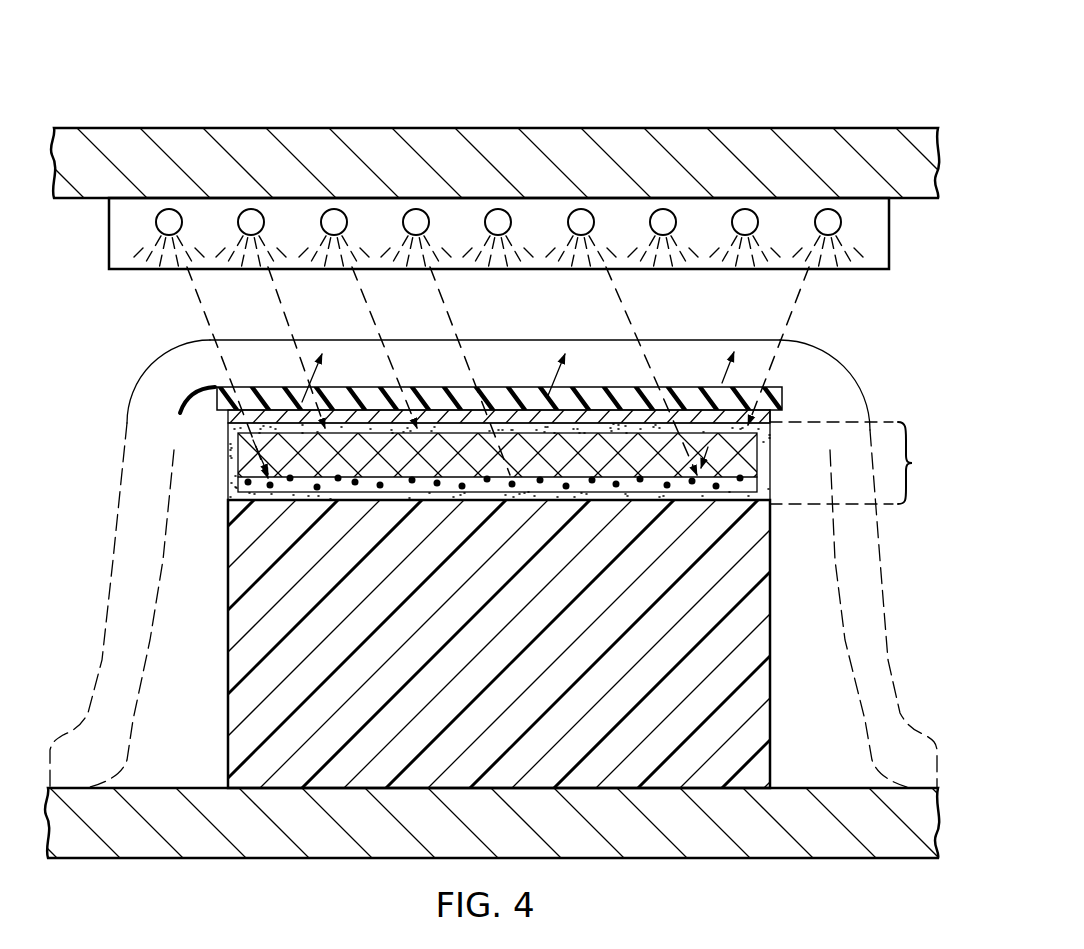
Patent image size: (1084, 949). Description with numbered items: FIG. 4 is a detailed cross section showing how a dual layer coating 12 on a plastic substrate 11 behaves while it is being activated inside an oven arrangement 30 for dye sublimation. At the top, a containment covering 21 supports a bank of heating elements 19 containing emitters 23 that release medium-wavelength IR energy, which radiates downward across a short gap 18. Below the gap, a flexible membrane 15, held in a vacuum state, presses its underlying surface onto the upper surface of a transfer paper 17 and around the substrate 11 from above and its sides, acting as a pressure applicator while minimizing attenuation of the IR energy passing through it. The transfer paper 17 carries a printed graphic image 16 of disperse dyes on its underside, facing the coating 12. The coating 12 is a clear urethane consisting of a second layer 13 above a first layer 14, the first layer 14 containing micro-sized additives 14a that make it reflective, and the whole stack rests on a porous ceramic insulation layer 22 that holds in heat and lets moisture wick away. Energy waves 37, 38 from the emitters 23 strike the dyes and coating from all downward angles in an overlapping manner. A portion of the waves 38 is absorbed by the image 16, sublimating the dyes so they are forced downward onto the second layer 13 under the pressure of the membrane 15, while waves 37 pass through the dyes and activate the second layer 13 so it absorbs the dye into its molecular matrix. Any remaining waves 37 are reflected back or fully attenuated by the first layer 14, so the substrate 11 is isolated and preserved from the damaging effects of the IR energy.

The oven arrangement 30 is at (218, 68).
The containment covering 21 is at (865, 138).
The bank of heating elements 19 is at (892, 232).
The emitters 23 is at (156, 216).
The short gap 18 is at (500, 250).
The energy waves 37 is at (193, 285).
The energy waves 38 is at (280, 300).
The flexible membrane 15 is at (497, 374).
The transfer paper 17 is at (767, 401).
The graphic image 16 is at (233, 416).
The synthetic organic polymer coating 12 is at (547, 473).
The second layer 13 is at (770, 456).
The first layer 14 is at (266, 503).
The micro-sized additives 14a is at (247, 482).
The plastic substrate 11 is at (766, 678).
The porous ceramic insulation layer 22 is at (886, 848).